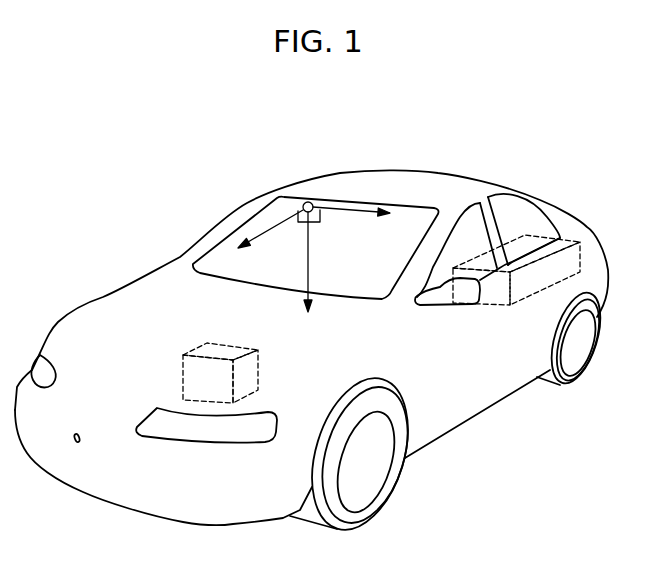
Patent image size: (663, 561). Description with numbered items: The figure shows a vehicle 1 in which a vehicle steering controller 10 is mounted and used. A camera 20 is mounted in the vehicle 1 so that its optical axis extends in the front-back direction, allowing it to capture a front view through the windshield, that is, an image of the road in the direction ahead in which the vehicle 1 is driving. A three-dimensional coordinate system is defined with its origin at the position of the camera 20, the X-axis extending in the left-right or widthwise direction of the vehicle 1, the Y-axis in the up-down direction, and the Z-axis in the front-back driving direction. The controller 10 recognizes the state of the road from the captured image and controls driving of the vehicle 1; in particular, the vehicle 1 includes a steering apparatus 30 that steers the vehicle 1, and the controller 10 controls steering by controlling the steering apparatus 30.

The vehicle 1 is at (198, 131).
The vehicle steering controller 10 is at (578, 240).
The camera 20 is at (304, 203).
The steering apparatus 30 is at (193, 343).